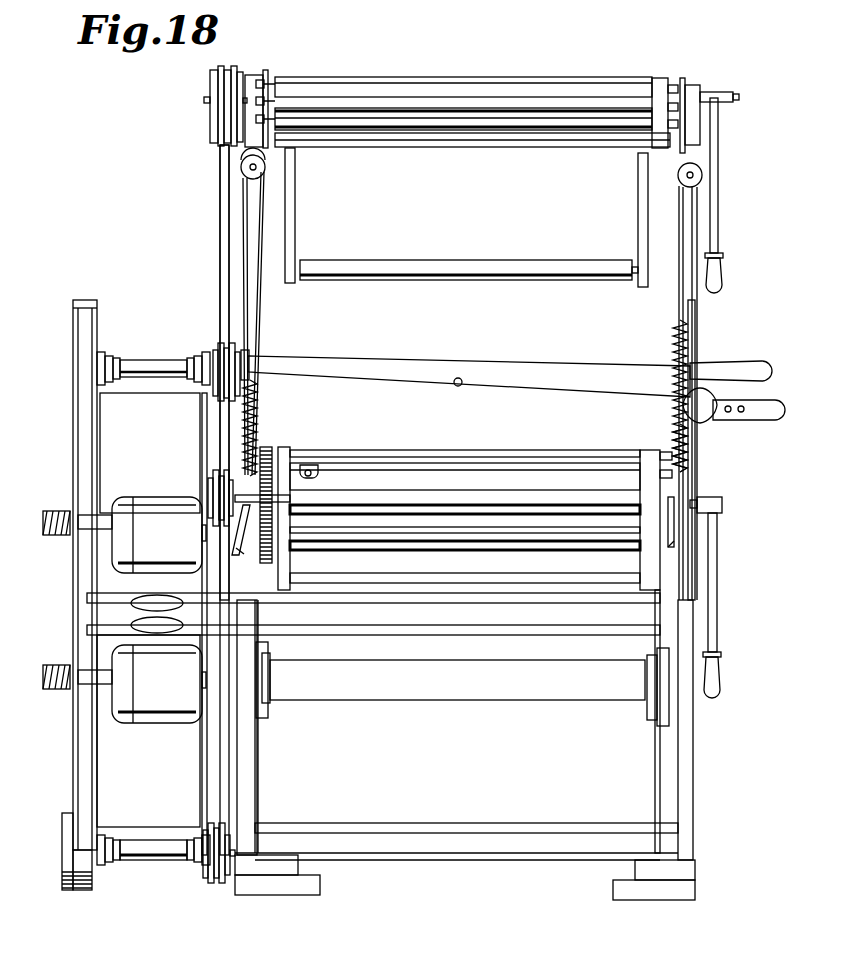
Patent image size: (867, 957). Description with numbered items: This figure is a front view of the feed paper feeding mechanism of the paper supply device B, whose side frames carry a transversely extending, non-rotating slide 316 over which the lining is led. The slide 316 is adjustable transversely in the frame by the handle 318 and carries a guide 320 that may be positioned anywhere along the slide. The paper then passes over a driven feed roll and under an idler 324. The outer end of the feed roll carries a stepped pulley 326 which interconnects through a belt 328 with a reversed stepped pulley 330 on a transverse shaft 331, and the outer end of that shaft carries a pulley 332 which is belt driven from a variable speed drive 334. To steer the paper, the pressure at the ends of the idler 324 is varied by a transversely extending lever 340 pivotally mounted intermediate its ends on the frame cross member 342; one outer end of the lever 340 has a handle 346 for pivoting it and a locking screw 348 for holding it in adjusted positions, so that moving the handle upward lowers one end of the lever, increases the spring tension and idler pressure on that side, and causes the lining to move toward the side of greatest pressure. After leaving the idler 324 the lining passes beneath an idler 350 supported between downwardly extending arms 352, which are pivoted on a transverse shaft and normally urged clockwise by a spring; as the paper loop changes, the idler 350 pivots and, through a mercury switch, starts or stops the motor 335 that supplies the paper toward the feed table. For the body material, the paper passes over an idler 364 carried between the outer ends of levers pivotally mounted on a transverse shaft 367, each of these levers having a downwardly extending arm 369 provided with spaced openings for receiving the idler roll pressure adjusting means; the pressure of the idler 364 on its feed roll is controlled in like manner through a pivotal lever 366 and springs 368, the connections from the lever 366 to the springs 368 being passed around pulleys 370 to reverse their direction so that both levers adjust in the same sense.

The slide 316 is at (586, 102).
The handle 318 is at (703, 94).
The guide 320 is at (662, 78).
The idler 324 is at (406, 80).
The stepped pulley 326 is at (233, 66).
The belt 328 is at (221, 246).
The reversed stepped pulley 330 is at (215, 342).
The transverse shaft 331 is at (148, 358).
The pulley 332 is at (92, 311).
The variable speed drive 334 is at (99, 510).
The motor 335 is at (162, 500).
The lever 340 is at (718, 366).
The frame cross member 342 is at (478, 368).
The handle 346 is at (772, 362).
The locking screw 348 is at (700, 350).
The idler 350 is at (480, 262).
The downwardly extending arms 352 is at (292, 215).
The idler 364 is at (465, 516).
The pivotal lever 366 is at (778, 421).
The transverse shaft 367 is at (695, 497).
The springs 368 is at (258, 420).
The latch 369 is at (232, 553).
The pulleys 370 is at (240, 169).
The paper supply device B is at (706, 143).